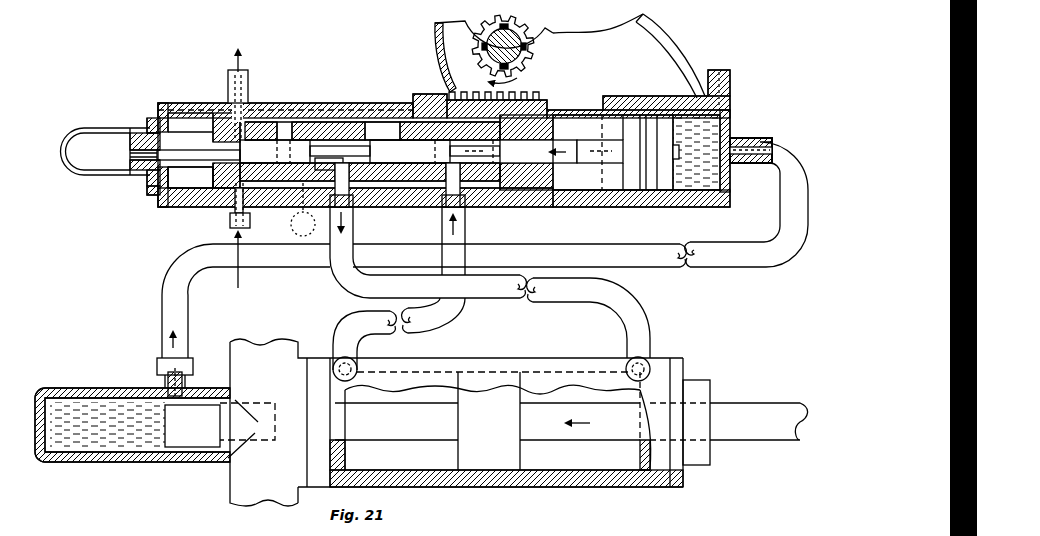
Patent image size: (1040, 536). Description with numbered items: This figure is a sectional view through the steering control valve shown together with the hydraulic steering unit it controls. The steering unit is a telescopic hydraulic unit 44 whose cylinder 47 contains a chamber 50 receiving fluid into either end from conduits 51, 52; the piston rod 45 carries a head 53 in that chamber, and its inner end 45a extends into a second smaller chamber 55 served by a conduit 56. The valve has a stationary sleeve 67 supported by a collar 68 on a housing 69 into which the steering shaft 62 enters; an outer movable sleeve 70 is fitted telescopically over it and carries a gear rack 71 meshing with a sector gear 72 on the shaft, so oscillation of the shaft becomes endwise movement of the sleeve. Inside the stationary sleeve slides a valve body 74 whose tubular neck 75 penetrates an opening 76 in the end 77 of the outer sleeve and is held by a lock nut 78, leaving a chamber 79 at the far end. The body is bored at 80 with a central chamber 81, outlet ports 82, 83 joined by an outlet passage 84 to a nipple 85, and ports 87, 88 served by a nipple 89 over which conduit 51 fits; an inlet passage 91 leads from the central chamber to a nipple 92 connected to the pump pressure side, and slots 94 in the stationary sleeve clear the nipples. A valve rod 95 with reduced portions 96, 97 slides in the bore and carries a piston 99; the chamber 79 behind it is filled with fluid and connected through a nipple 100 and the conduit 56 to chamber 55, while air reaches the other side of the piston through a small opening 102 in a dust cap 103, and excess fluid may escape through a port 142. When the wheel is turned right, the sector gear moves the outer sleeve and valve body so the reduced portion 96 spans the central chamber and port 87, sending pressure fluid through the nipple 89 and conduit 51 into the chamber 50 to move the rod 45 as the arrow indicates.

The telescopic hydraulic unit 44 is at (558, 363).
The piston rod element 45 is at (752, 410).
The inner end of the rod 45a is at (192, 431).
The cylinder portion 47 is at (498, 488).
The chamber 50 is at (558, 466).
The conduit 51 is at (641, 328).
The conduit 52 is at (447, 311).
The head 53 is at (487, 421).
The second and smaller chamber 55 is at (122, 417).
The conduit 56 is at (178, 317).
The steering shaft 62 is at (533, 60).
The stationary sleeve 67 is at (573, 110).
The collar 68 is at (633, 102).
The housing 69 is at (678, 54).
The outer movable sleeve 70 is at (168, 204).
The gear rack 71 is at (527, 97).
The sector gear 72 is at (480, 26).
The valve body 74 is at (211, 189).
The tubular neck portion 75 is at (128, 171).
The opening 76 is at (153, 190).
The end of the sleeve 77 is at (162, 194).
The lock nut 78 is at (150, 176).
The chamber 79 is at (708, 135).
The bore 80 is at (552, 139).
The central chamber 81 is at (412, 164).
The fluid outlet port 82 is at (289, 165).
The fluid outlet port 83 is at (493, 165).
The outlet passage 84 is at (327, 127).
The nipple 85 is at (247, 90).
The port 87 is at (329, 163).
The port 88 is at (178, 151).
The nipple 89 is at (348, 200).
The inlet passage 91 is at (303, 209).
The nipple 92 is at (231, 223).
The slots 94 is at (308, 90).
The valve rod 95 is at (561, 151).
The reduced portion 96 is at (357, 149).
The reduced portion 97 is at (448, 168).
The piston 99 is at (632, 167).
The nipple 100 is at (748, 170).
The small opening 102 is at (64, 153).
The dust cap 103 is at (84, 133).
The port 142 is at (719, 72).